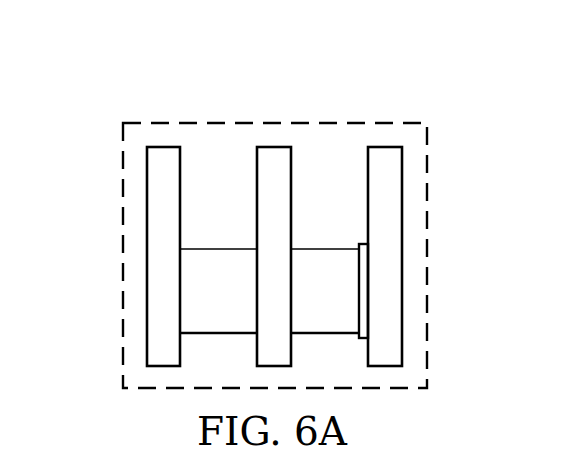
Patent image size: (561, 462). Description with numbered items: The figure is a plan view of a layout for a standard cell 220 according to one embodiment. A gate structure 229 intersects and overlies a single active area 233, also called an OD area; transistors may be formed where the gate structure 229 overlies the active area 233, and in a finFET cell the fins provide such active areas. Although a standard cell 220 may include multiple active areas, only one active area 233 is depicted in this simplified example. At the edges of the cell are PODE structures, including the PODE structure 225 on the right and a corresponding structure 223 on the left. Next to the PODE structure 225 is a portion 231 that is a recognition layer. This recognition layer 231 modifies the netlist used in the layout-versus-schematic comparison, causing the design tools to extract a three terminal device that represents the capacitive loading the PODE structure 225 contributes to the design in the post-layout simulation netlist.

The standard cell 220 is at (240, 90).
The first flange 223 is at (147, 220).
The PODE structure 225 is at (402, 220).
The gate structure 229 is at (273, 147).
The recognition layer 231 is at (359, 277).
The active area 233 is at (222, 249).